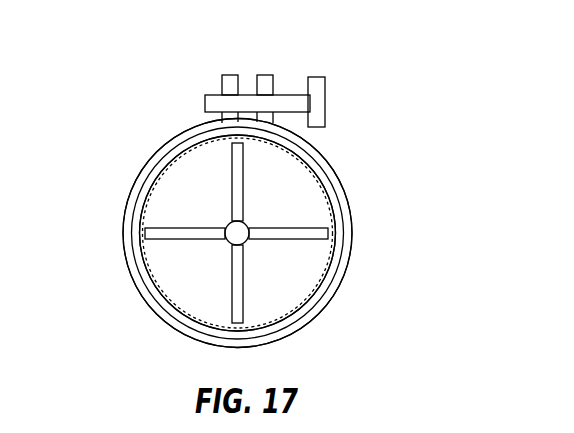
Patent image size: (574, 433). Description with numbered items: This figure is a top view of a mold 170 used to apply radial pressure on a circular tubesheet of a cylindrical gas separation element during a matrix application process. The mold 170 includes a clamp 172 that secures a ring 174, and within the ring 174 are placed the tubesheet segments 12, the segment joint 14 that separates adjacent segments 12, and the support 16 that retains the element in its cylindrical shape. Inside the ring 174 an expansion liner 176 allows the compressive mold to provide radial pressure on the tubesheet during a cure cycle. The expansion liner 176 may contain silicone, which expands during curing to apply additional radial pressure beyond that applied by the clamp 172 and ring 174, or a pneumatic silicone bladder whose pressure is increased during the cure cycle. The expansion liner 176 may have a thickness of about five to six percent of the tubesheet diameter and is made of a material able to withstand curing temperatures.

The mold 170 is at (160, 72).
The clamp 172 is at (275, 94).
The ring 174 is at (348, 203).
The expansion liner 176 is at (187, 148).
The segments 12 is at (297, 205).
The segment joint 14 is at (313, 240).
The support 16 is at (240, 233).